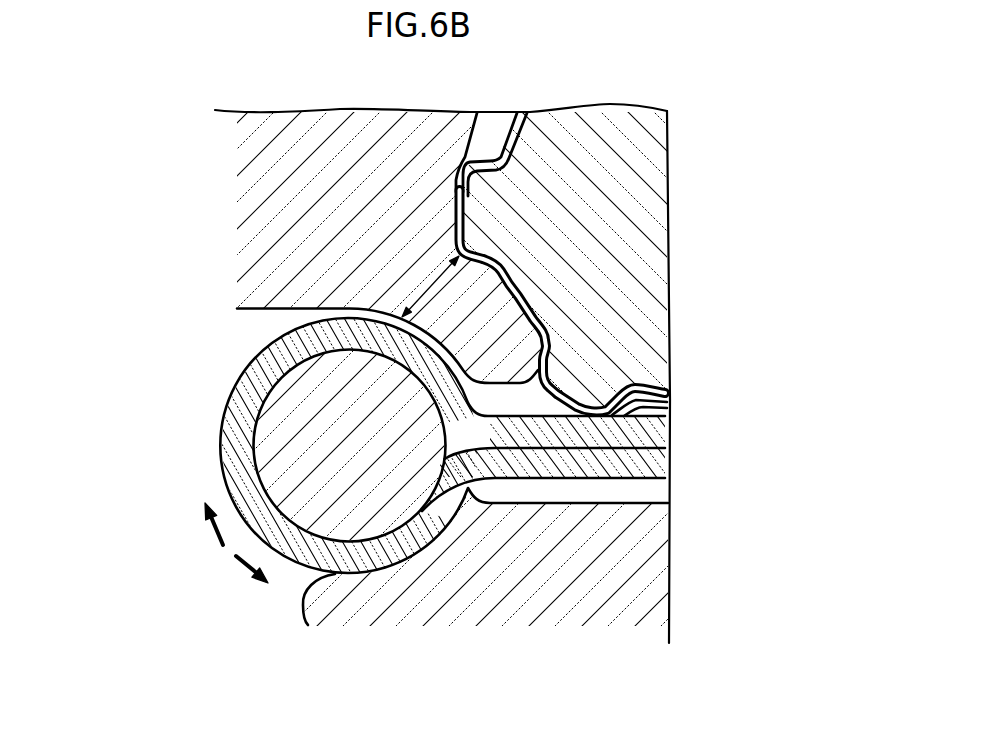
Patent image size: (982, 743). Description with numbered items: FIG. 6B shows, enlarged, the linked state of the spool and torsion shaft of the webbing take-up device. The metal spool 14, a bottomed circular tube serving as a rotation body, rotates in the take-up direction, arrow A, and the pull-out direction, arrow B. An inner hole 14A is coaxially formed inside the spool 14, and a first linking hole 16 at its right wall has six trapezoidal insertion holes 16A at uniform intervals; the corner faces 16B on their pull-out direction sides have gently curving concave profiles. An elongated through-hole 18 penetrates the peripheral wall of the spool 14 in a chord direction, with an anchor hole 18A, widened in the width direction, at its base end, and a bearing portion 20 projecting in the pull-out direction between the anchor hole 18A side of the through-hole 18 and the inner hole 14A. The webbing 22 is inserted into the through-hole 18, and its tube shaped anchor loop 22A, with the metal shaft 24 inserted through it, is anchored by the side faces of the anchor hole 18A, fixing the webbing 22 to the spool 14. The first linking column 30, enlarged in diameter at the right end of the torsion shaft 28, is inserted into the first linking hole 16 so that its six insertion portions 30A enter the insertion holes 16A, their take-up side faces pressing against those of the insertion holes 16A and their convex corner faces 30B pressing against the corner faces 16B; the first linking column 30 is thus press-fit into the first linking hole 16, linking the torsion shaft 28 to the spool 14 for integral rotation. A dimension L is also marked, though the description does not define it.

The spool 14 is at (224, 180).
The inner hole 14A is at (470, 210).
The first linking hole 16 is at (607, 303).
The insertion holes 16A is at (556, 362).
The corner faces 16B is at (463, 253).
The through-hole 18 is at (636, 498).
The anchor hole 18A is at (260, 309).
The bearing portion 20 is at (535, 322).
The webbing 22 is at (491, 371).
The anchor loop 22A is at (237, 384).
The shaft 24 is at (223, 469).
The torsion shaft 28 is at (637, 155).
The first linking column 30 is at (491, 371).
The insertion portions 30A is at (651, 430).
The corner faces 30B is at (458, 254).
The distance L is at (425, 290).
The take-up direction A is at (219, 541).
The pull-out direction B is at (241, 565).